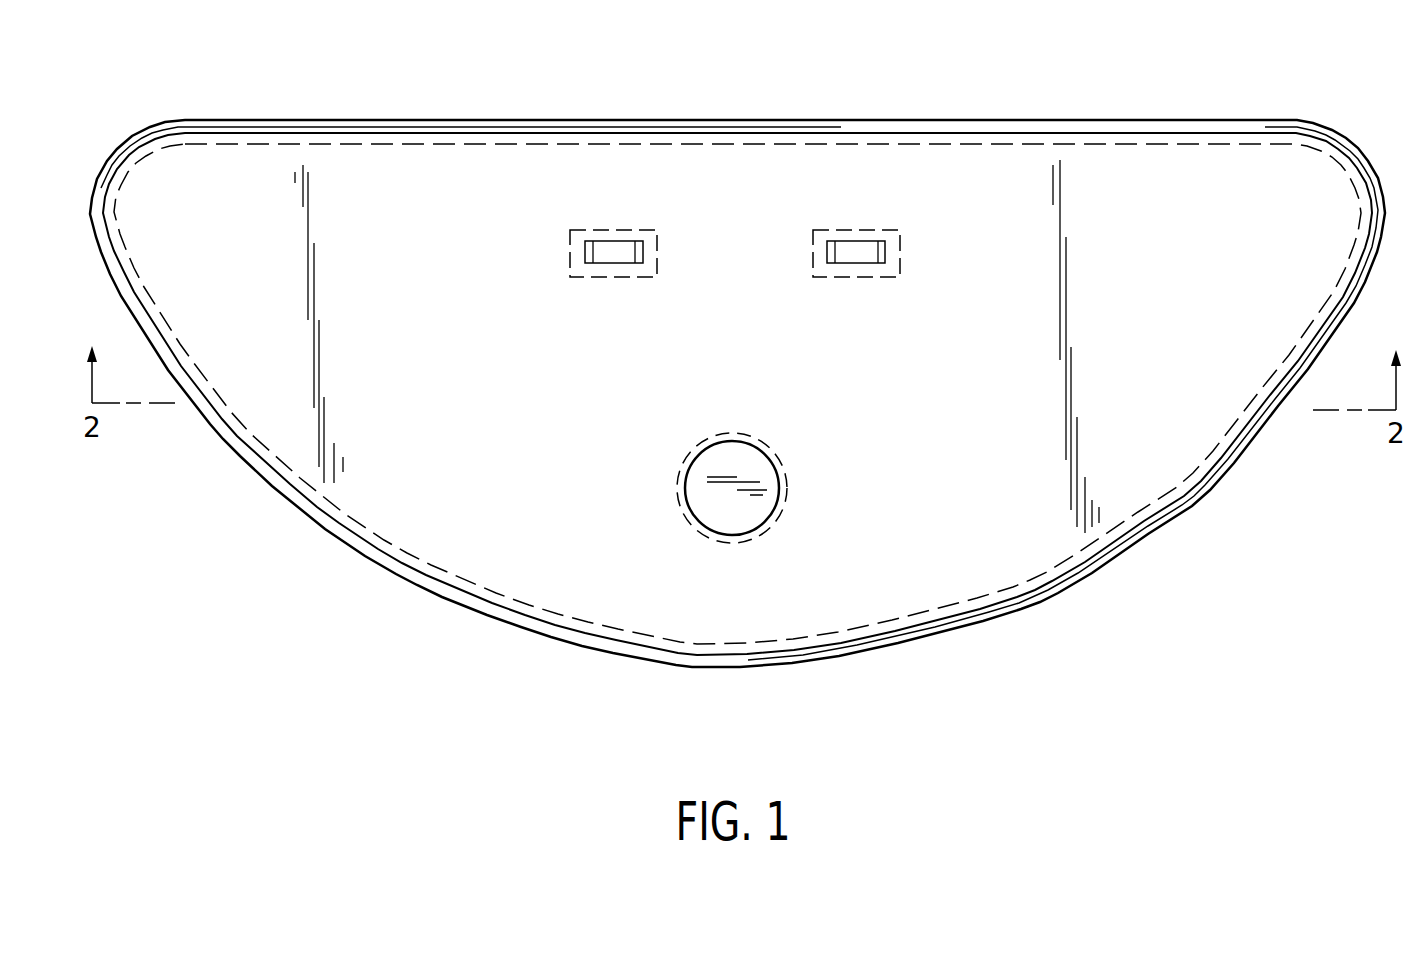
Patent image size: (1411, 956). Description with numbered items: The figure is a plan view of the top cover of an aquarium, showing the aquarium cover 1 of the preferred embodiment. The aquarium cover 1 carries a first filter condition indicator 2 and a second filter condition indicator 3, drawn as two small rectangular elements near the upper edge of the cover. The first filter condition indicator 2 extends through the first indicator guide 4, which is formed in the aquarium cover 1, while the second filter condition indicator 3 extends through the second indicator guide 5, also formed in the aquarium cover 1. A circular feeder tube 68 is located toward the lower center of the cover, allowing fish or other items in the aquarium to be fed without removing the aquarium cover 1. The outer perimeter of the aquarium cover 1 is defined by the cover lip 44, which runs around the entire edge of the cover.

The aquarium cover 1 is at (652, 612).
The first filter condition indicator 2 is at (611, 240).
The second filter condition indicator 3 is at (846, 240).
The first indicator guide 4 is at (590, 230).
The second indicator guide 5 is at (900, 257).
The cover lip 44 is at (1033, 602).
The feeder tube 68 is at (775, 523).